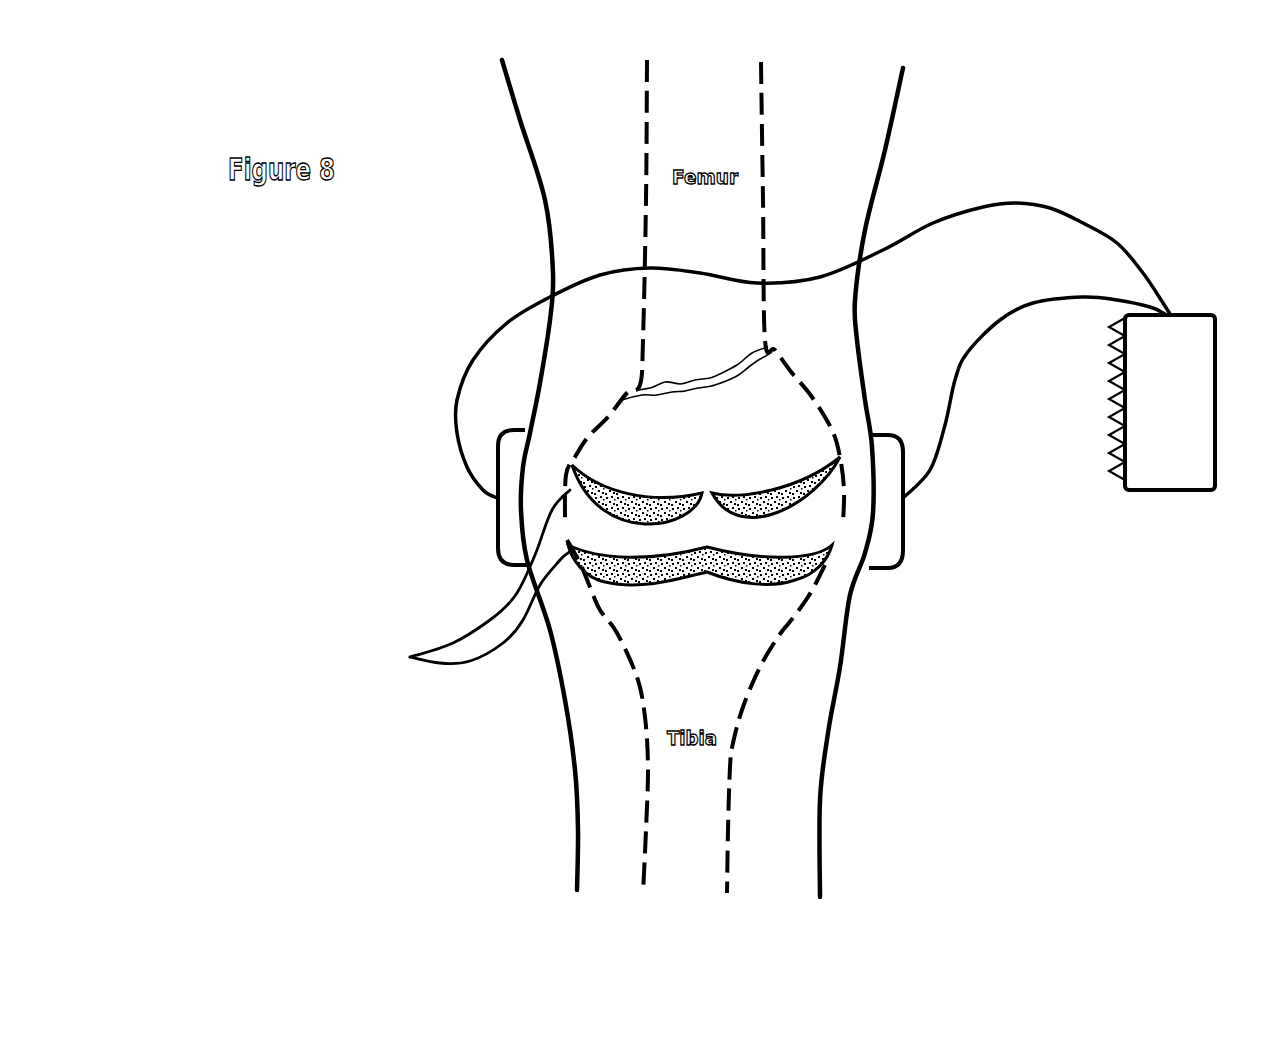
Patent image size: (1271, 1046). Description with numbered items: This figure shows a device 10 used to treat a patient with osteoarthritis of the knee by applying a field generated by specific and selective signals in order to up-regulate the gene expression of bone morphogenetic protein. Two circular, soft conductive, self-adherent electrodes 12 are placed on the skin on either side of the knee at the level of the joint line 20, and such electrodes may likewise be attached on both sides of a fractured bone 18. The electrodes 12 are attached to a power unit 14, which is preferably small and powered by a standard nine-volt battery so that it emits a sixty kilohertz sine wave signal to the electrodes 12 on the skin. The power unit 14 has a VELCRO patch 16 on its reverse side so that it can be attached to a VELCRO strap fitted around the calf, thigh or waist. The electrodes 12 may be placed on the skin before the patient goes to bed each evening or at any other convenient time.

The device 10 is at (963, 165).
The self-adherent electrodes 12 is at (497, 510).
The power unit 14 is at (1215, 353).
The VELCRO patch 16 is at (1108, 460).
The fractured bone 18 is at (631, 391).
The joint line 20 is at (450, 556).